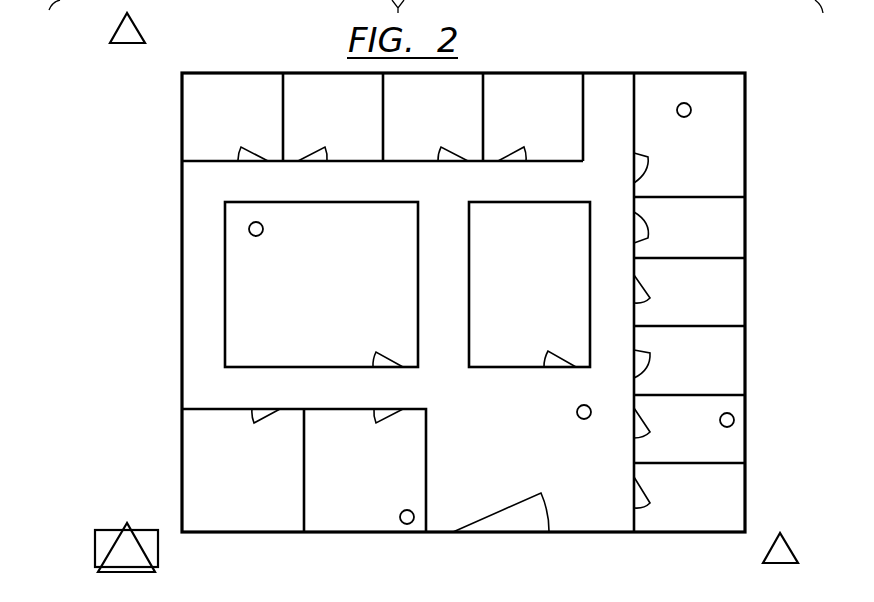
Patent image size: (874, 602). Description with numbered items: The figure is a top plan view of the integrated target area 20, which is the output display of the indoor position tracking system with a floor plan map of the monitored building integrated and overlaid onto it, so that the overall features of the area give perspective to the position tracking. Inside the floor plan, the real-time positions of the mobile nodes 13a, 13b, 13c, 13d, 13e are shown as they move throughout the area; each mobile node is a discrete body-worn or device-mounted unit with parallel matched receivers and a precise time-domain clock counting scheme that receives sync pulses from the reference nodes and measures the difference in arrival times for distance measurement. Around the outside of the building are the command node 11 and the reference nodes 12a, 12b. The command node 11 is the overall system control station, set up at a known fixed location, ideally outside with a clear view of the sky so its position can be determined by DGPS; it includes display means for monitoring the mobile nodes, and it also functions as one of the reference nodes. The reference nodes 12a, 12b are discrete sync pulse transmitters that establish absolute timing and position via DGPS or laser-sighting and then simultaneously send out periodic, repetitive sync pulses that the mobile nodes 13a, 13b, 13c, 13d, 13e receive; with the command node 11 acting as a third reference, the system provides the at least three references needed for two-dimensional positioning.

The integrated target area 20 is at (760, 66).
The mobile node 13a is at (249, 228).
The mobile node 13b is at (408, 524).
The mobile node 13c is at (588, 419).
The mobile node 13d is at (734, 417).
The mobile node 13e is at (691, 107).
The command node 11 is at (108, 530).
The reference node 12a is at (785, 546).
The reference node 12b is at (136, 26).